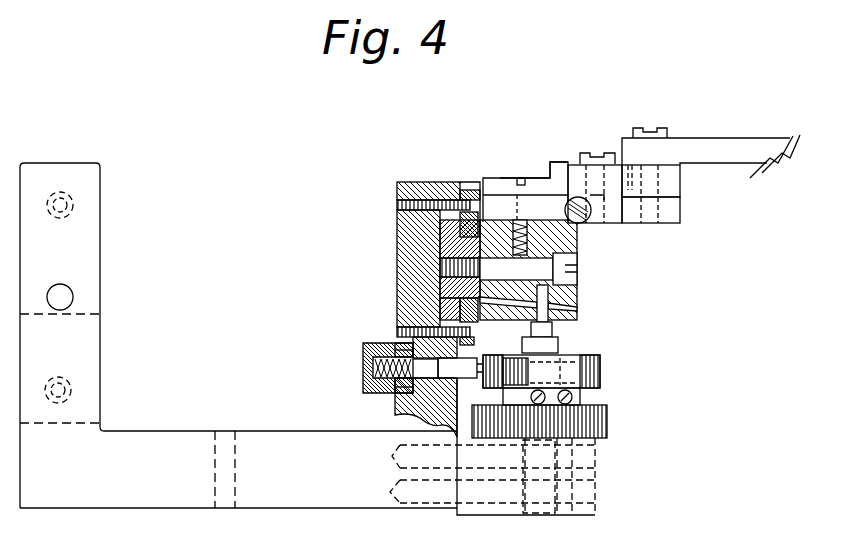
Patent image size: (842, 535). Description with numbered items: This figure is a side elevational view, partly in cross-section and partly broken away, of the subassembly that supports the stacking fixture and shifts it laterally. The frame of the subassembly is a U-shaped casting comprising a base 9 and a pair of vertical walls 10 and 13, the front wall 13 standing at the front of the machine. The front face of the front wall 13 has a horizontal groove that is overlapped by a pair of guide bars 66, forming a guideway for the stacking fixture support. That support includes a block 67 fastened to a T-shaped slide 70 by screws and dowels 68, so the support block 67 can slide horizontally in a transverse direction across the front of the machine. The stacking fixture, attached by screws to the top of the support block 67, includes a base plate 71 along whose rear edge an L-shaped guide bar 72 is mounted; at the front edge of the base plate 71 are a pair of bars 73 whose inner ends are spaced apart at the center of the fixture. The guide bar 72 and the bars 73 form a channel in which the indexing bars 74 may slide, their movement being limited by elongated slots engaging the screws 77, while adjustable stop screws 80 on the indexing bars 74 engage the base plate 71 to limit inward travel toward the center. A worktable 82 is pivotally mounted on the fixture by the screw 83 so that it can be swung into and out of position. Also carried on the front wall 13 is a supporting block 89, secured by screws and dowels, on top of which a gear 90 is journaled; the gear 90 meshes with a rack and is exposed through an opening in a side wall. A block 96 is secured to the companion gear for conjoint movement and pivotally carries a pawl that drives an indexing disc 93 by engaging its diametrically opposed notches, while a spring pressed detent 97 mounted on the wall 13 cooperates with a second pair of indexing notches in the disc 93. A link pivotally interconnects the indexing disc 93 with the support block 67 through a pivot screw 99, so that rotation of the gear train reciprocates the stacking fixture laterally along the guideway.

The base 9 is at (181, 508).
The vertical wall 10 is at (93, 249).
The front wall 13 is at (398, 248).
The guide bars 66 is at (470, 185).
The support block 67 is at (577, 298).
The screws and dowels 68 is at (573, 260).
The T-shaped slide 70 is at (440, 292).
The base plate 71 is at (670, 219).
The L-shaped guide bar 72 is at (562, 172).
The bars 73 is at (675, 187).
The indexing bars 74 is at (617, 218).
The screws 77 is at (585, 153).
The adjustable stop screws 80 is at (566, 208).
The worktable 82 is at (717, 147).
The screw 83 is at (660, 135).
The supporting block 89 is at (597, 475).
The gear 90 is at (607, 427).
The indexing disc 93 is at (600, 363).
The block 96 is at (513, 397).
The spring pressed detent 97 is at (463, 378).
The pivot screw 99 is at (550, 325).